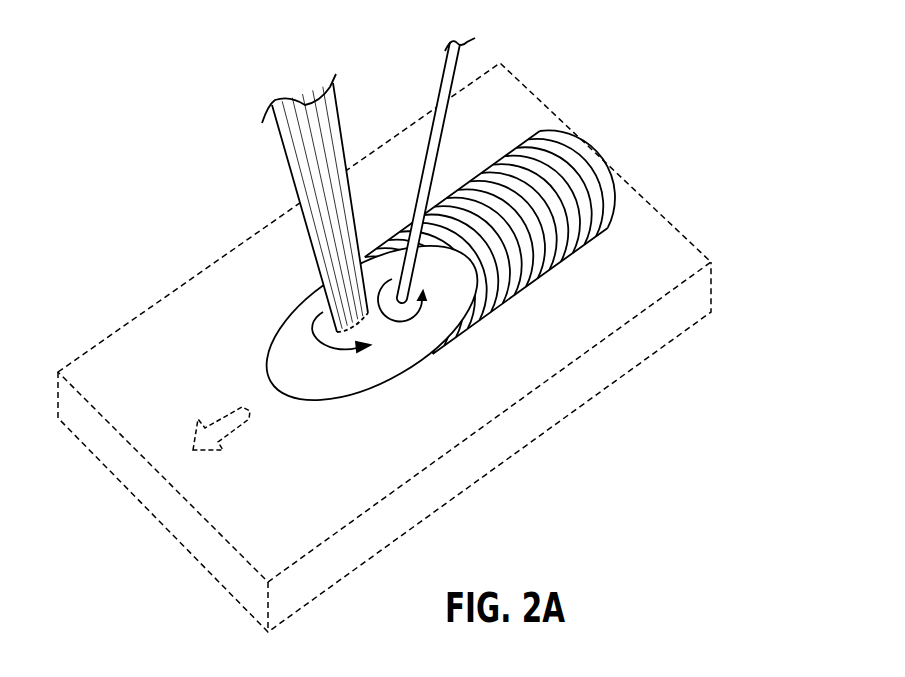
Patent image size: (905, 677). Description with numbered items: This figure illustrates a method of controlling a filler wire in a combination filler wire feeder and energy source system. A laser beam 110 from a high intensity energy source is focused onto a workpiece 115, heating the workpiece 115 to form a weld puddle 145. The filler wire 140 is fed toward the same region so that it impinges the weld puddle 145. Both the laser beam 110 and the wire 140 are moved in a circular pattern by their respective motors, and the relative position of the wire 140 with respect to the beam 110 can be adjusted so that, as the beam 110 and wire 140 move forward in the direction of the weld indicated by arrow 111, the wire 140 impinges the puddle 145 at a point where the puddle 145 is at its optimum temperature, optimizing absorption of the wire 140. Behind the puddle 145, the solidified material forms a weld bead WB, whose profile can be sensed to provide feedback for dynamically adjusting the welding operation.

The laser beam 110 is at (338, 138).
The arrow 111 is at (238, 427).
The workpiece 115 is at (662, 253).
The wire 140 is at (460, 66).
The weld puddle 145 is at (307, 338).
The weld bead WB is at (578, 168).